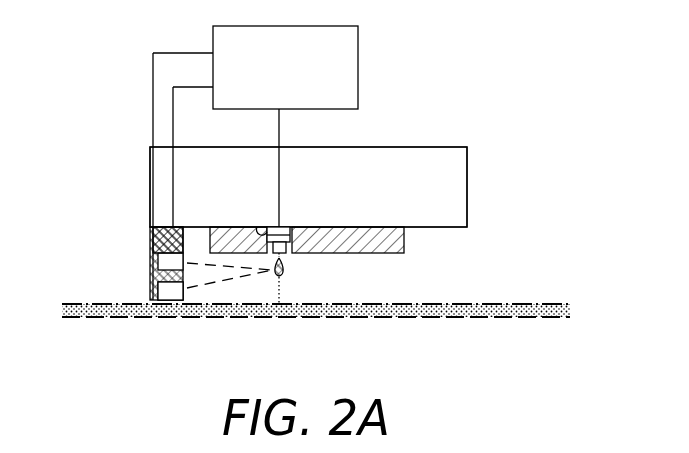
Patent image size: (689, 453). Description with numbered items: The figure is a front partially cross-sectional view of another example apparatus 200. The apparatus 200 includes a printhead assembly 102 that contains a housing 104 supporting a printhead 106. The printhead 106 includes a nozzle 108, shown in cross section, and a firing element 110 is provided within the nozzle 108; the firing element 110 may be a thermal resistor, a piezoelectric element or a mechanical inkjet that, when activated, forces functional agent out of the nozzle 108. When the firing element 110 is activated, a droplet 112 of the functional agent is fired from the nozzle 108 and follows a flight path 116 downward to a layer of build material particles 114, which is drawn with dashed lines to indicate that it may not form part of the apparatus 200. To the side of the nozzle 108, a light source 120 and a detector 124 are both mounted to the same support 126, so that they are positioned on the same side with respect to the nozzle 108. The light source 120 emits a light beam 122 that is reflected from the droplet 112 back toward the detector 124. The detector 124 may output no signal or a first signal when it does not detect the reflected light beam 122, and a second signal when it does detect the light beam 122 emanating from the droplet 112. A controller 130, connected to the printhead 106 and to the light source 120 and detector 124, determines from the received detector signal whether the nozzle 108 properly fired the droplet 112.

The apparatus 200 is at (98, 40).
The printhead assembly 102 is at (120, 141).
The housing 104 is at (467, 185).
The printhead 106 is at (315, 227).
The nozzle 108 is at (262, 232).
The firing element 110 is at (262, 227).
The droplet 112 is at (285, 268).
The layer of build material particles 114 is at (489, 318).
The flight path 116 is at (282, 288).
The light source 120 is at (153, 262).
The light beam 122 is at (222, 268).
The detector 124 is at (163, 300).
The support 126 is at (150, 240).
The controller 130 is at (306, 79).